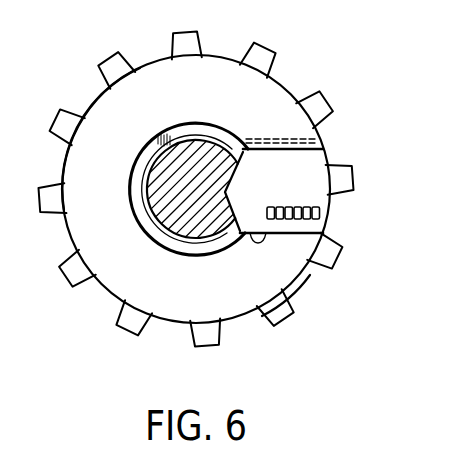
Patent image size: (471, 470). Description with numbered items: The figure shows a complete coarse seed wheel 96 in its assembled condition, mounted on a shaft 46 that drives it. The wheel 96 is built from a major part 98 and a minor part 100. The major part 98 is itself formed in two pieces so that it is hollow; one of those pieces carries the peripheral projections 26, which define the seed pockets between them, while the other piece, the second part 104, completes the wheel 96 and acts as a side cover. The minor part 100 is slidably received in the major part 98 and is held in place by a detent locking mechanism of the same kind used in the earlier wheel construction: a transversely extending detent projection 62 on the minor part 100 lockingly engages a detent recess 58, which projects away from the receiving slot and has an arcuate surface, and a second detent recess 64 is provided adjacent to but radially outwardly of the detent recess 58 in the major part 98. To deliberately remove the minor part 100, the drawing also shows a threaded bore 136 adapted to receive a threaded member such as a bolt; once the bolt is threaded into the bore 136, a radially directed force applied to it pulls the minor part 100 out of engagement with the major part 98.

The projections 26 is at (288, 317).
The shaft 46 is at (182, 152).
The detent recess 58 is at (258, 240).
The detent projection 62 is at (257, 228).
The second detent recess 64 is at (290, 232).
The coarse wheel 96 is at (91, 75).
The major part 98 is at (105, 115).
The minor part 100 is at (297, 157).
The second part 104 is at (238, 303).
The threaded bore 136 is at (323, 213).